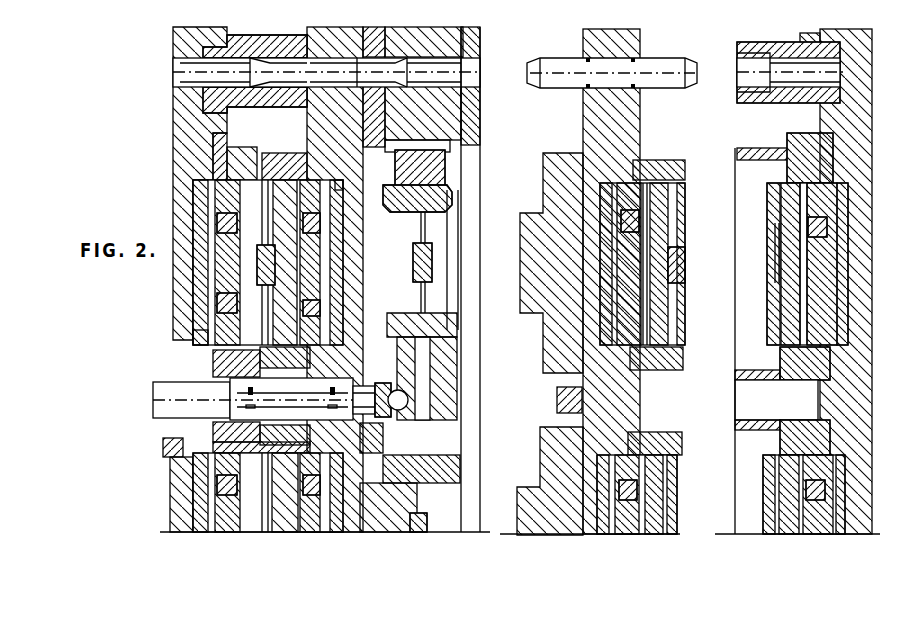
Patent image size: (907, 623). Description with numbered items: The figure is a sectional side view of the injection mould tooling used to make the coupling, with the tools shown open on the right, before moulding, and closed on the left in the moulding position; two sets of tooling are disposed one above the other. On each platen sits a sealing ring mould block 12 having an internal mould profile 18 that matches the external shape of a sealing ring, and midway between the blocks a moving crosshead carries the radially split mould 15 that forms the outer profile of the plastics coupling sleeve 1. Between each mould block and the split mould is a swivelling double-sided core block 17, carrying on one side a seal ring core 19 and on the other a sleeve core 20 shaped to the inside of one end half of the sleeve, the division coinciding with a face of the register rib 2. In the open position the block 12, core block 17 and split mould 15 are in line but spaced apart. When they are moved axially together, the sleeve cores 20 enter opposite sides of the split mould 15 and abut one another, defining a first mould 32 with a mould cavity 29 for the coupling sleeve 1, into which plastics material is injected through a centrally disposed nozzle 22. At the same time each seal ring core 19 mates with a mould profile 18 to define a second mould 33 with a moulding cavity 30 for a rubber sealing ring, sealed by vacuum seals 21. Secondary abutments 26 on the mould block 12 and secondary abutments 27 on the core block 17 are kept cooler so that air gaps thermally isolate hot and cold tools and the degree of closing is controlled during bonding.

The plastics coupling sleeve 1 is at (440, 315).
The register rib 2 is at (426, 216).
The sealing ring mould block 12 is at (240, 327).
The radially split mould 15 is at (440, 203).
The core block 17 is at (345, 186).
The internal mould profile 18 is at (768, 316).
The seal ring core 19 is at (240, 227).
The sleeve core 20 is at (398, 285).
The vacuum seal 21 is at (250, 172).
The nozzle 22 is at (367, 410).
The secondary abutment 26 is at (742, 383).
The secondary abutment 27 is at (668, 162).
The mould cavity 29 is at (428, 190).
The moulding cavity 30 is at (269, 198).
The first mould 32 is at (489, 354).
The second mould 33 is at (184, 190).